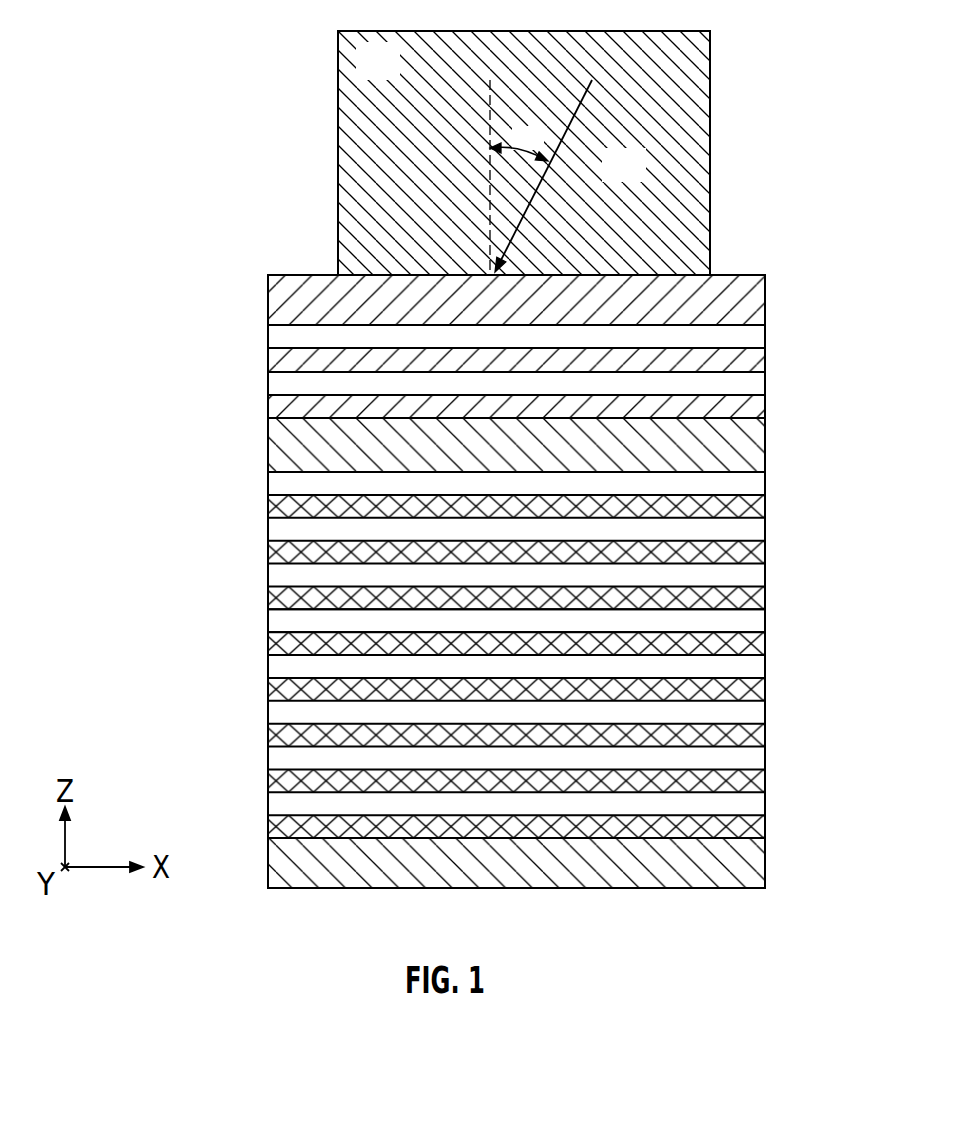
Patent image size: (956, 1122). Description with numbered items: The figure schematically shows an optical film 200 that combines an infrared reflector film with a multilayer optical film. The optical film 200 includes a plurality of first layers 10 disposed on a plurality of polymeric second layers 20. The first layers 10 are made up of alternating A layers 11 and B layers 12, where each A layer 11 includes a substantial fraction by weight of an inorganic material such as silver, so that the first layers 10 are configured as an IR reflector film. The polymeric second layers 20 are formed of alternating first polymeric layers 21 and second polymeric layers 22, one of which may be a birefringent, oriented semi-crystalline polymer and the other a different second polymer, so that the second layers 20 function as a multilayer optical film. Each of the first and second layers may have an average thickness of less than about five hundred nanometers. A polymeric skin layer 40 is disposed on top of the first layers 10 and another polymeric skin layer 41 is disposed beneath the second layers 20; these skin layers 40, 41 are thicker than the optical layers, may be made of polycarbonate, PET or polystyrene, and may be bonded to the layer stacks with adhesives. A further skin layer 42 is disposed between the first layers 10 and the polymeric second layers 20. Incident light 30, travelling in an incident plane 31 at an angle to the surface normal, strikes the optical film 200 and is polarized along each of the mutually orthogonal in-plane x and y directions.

The optical film 200 is at (172, 92).
The incident plane 31 is at (394, 76).
The incident light 30 is at (557, 146).
The polymeric skin layer 40 is at (762, 306).
The plurality of first layers 10 is at (253, 325).
The A layer 11 is at (762, 340).
The B layer 12 is at (762, 357).
The further skin layer 42 is at (762, 450).
The plurality of polymeric second layers 20 is at (253, 472).
The first polymeric layer 21 is at (762, 620).
The second polymeric layer 22 is at (762, 640).
The polymeric skin layer 41 is at (762, 865).